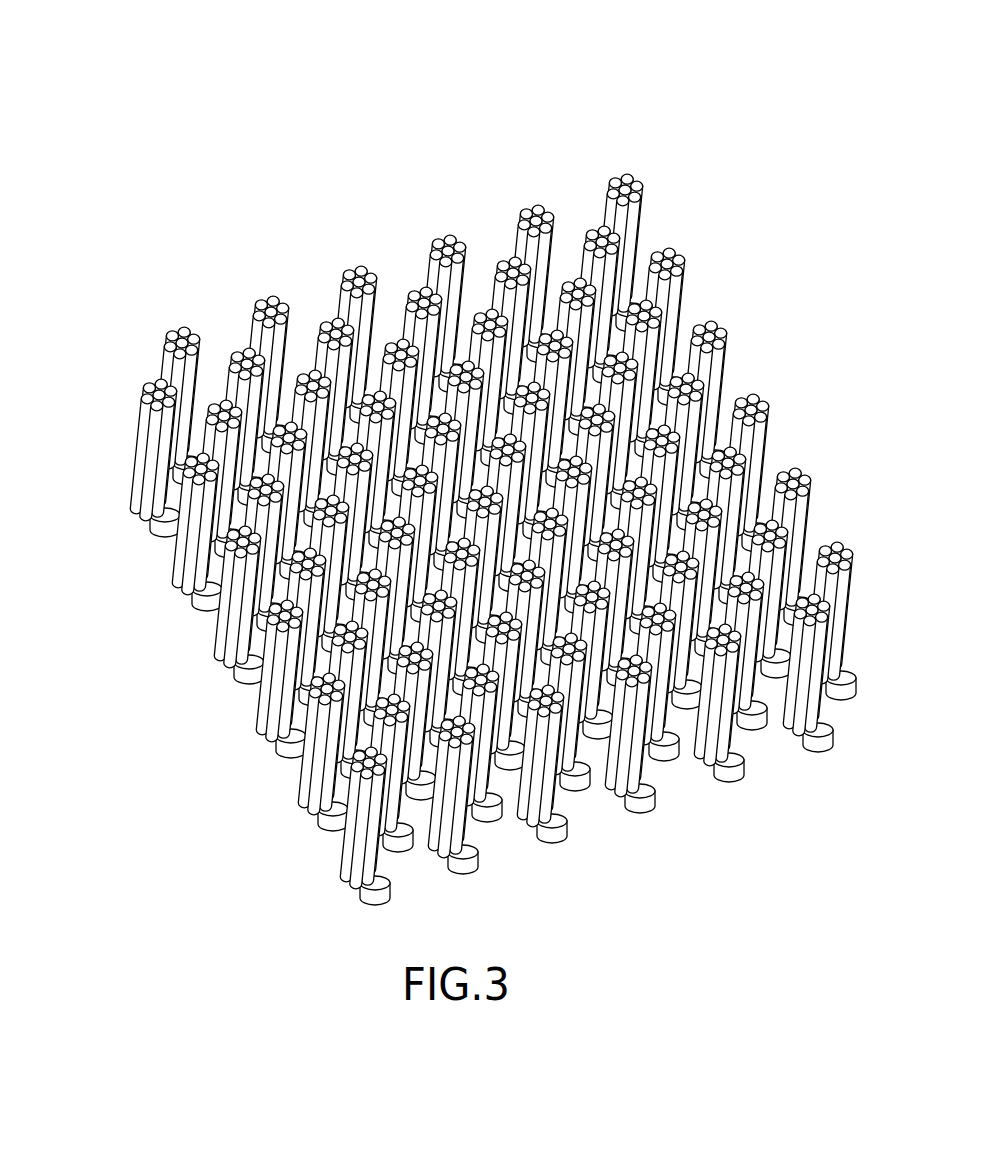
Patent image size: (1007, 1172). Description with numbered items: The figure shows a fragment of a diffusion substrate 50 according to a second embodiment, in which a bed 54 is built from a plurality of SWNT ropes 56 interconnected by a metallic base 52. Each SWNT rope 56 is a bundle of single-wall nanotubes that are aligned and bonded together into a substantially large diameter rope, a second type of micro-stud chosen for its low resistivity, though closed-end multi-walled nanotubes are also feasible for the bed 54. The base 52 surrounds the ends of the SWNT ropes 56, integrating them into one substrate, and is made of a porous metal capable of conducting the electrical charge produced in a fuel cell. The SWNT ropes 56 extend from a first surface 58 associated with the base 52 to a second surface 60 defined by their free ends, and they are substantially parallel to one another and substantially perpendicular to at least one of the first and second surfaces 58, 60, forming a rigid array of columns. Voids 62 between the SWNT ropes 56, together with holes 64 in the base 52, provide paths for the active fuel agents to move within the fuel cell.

The diffusion substrate 50 is at (718, 121).
The base 52 is at (777, 715).
The bed 54 is at (641, 152).
The SWNT ropes 56 is at (137, 428).
The first surface 58 is at (598, 752).
The second surface 60 is at (724, 239).
The voids 62 is at (380, 662).
The holes 64 is at (493, 813).